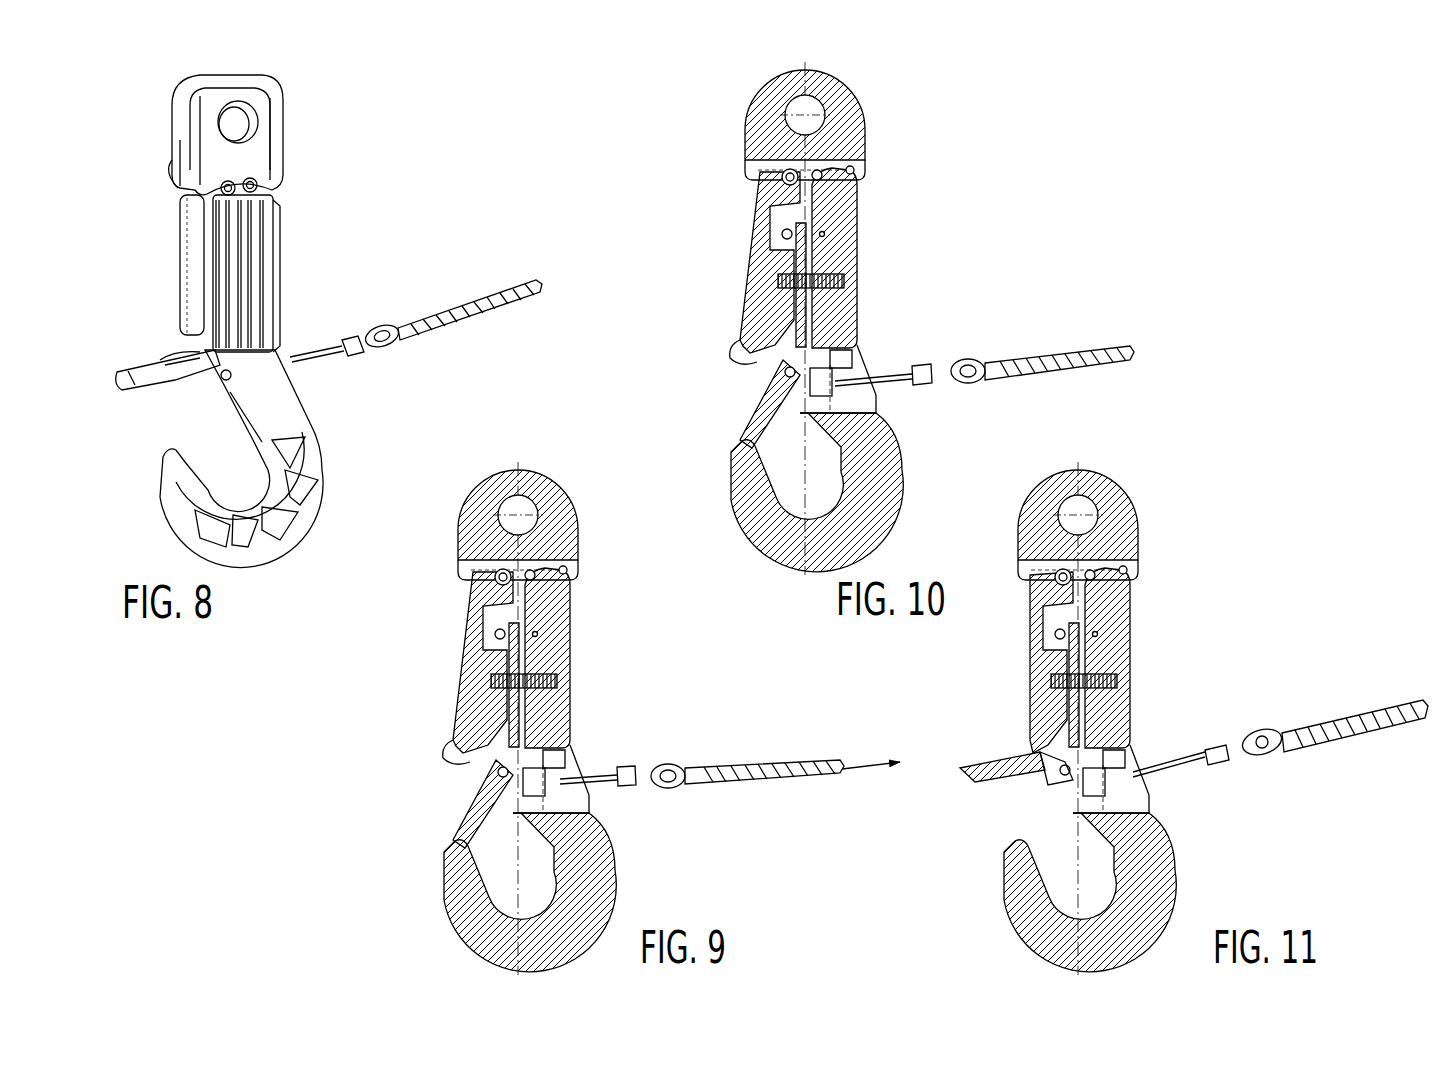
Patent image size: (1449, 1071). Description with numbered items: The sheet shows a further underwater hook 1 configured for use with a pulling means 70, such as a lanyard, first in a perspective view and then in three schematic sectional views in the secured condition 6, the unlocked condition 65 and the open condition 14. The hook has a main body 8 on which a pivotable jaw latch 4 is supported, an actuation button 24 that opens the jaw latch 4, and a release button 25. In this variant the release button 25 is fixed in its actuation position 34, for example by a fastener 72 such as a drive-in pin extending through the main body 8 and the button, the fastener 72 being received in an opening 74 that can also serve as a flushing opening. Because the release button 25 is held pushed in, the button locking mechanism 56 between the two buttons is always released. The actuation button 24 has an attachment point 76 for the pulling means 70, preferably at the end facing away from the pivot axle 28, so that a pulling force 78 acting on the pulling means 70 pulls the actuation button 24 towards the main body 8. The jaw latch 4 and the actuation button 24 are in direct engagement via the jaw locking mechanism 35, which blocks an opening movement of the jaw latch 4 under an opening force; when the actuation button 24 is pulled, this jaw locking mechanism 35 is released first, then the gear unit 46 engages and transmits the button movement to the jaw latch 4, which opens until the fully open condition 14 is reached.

In FIG. 10, the underwater hook 1 is at (903, 312).
In FIG. 9, the underwater hook 1 is at (647, 712).
In FIG. 11, the underwater hook 1 is at (1194, 710).
In FIG. 8, the underwater hook 1 is at (325, 319).
In FIG. 10, the jaw latch 4 is at (745, 425).
In FIG. 11, the jaw latch 4 is at (1016, 792).
In FIG. 9, the secured condition 6 is at (510, 652).
In FIG. 9, the main body 8 is at (545, 892).
In FIG. 8, the main body 8 is at (290, 380).
In FIG. 11, the open condition 14 is at (1099, 721).
In FIG. 8, the open condition 14 is at (325, 321).
In FIG. 10, the actuation button 24 is at (745, 285).
In FIG. 9, the actuation button 24 is at (515, 652).
In FIG. 11, the actuation button 24 is at (1026, 661).
In FIG. 8, the actuation button 24 is at (185, 277).
In FIG. 10, the release button 25 is at (843, 258).
In FIG. 9, the release button 25 is at (583, 657).
In FIG. 11, the release button 25 is at (1134, 657).
In FIG. 8, the release button 25 is at (294, 271).
In FIG. 9, the pivot axle 28 is at (458, 569).
In FIG. 10, the actuation position 34 is at (871, 257).
In FIG. 9, the actuation position 34 is at (584, 657).
In FIG. 11, the actuation position 34 is at (1145, 657).
In FIG. 8, the actuation position 34 is at (294, 271).
In FIG. 10, the jaw locking mechanism 35 is at (845, 355).
In FIG. 10, the gear unit 46 is at (760, 372).
In FIG. 9, the button locking mechanism 56 is at (560, 602).
In FIG. 10, the unlocked condition 65 is at (736, 243).
In FIG. 8, the pulling means 70 is at (312, 347).
In FIG. 9, the fastener 72 is at (583, 673).
In FIG. 8, the fastener 72 is at (294, 271).
In FIG. 9, the opening 74 is at (583, 673).
In FIG. 8, the opening 74 is at (258, 235).
In FIG. 9, the attachment point 76 is at (702, 744).
In FIG. 9, the pulling force 78 is at (869, 733).